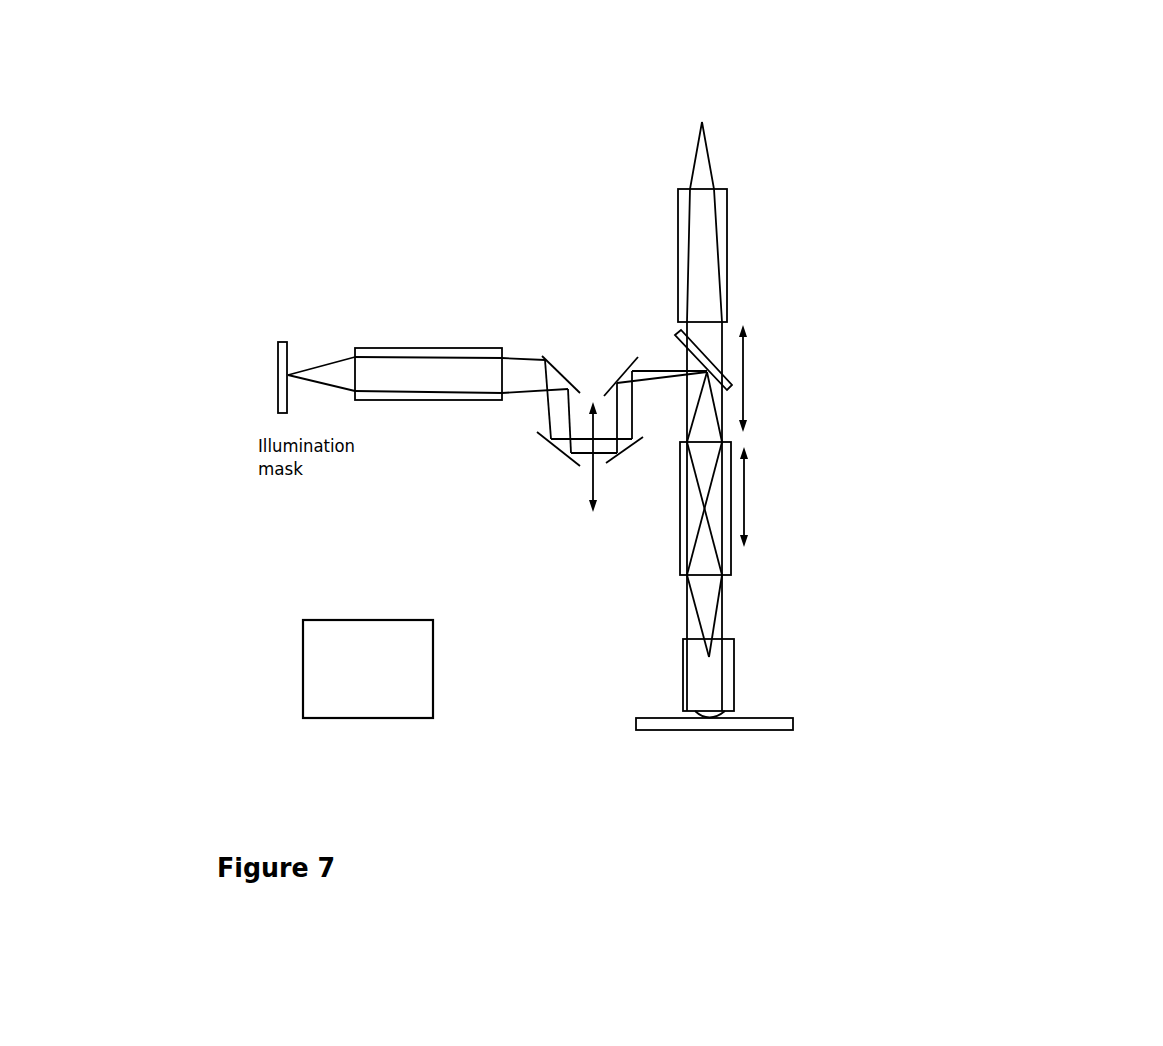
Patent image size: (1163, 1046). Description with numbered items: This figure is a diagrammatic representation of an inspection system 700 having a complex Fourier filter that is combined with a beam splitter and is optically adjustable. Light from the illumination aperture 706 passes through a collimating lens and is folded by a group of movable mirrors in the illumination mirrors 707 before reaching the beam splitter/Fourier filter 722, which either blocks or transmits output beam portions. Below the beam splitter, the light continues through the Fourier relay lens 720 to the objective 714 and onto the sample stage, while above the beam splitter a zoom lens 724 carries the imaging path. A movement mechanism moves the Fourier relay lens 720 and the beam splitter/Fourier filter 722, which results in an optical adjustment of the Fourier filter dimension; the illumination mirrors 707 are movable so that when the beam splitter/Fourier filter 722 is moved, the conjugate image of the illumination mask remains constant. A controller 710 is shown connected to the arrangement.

The imaging system 700 is at (1082, 98).
The illumination aperture 706 is at (285, 342).
The illumination mirrors 707 is at (547, 438).
The controller 710 is at (345, 620).
The objective 714 is at (734, 659).
The Fourier relay lens 720 is at (745, 502).
The beam splitter/Fourier filter 722 is at (743, 371).
The zoom lens 724 is at (678, 265).